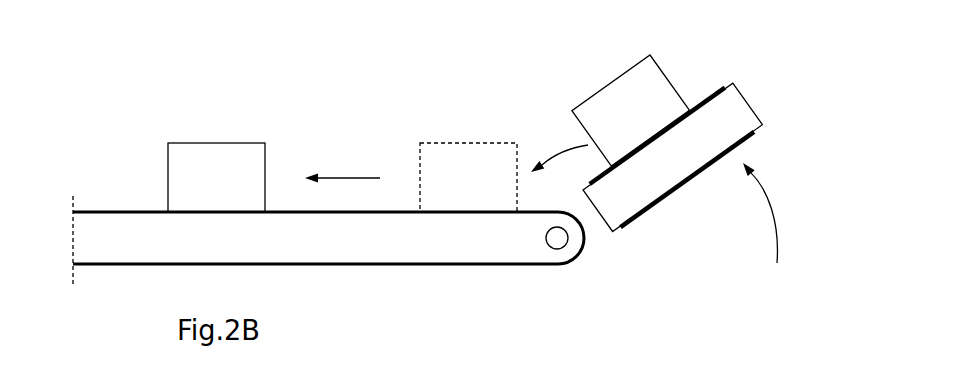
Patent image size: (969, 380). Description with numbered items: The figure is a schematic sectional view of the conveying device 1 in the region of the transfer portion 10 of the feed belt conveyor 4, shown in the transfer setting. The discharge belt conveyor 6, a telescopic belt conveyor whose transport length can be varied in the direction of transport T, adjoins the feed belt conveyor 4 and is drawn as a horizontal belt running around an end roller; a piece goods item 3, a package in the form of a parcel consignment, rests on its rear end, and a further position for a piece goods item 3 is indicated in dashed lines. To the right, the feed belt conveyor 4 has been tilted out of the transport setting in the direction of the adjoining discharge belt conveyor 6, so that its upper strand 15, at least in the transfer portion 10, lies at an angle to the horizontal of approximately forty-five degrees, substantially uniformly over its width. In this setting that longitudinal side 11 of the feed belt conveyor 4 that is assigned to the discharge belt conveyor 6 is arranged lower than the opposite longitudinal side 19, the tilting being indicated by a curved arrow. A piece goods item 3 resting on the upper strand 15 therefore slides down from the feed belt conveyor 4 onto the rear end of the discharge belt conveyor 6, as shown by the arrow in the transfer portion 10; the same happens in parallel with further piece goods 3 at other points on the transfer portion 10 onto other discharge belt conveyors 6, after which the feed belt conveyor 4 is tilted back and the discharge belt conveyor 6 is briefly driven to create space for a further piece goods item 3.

The conveying device 1 is at (277, 66).
The piece goods 3 is at (213, 160).
The feed belt conveyor 4 is at (675, 168).
The discharge belt conveyor 6 is at (395, 247).
The transfer portion 10 is at (547, 122).
The longitudinal side 11 is at (600, 245).
The upper strand 15 is at (703, 96).
The opposite longitudinal side 19 is at (769, 89).
The direction of transport T is at (351, 177).